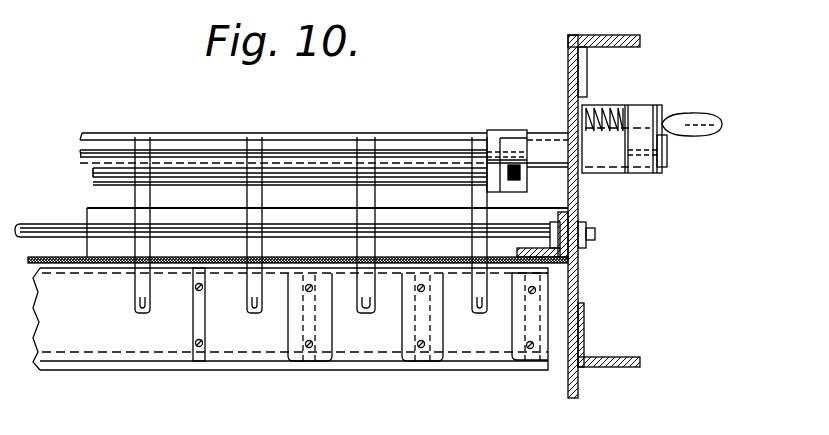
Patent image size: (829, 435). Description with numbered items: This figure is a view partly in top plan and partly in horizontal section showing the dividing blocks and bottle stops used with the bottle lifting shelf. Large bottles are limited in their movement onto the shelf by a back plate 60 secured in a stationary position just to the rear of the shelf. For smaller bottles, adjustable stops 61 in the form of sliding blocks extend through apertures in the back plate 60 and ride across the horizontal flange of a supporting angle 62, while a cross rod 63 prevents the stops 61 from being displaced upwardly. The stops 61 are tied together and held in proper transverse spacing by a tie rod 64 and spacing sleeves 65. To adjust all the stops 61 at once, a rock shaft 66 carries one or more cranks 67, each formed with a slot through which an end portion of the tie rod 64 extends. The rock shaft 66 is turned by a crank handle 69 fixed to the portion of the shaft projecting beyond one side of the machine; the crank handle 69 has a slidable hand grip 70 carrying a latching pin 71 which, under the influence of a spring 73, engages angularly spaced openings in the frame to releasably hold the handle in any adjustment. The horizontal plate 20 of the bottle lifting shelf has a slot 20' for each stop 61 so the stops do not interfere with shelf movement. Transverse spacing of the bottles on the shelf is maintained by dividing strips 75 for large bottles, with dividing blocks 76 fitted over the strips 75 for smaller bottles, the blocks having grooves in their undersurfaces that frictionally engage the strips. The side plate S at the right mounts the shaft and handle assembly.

The horizontal plate 20 is at (290, 336).
The slot 20' is at (422, 282).
The back plate 60 is at (42, 257).
The adjustable stops 61 is at (259, 212).
The supporting angle 62 is at (95, 247).
The cross rod 63 is at (413, 236).
The tie rod 64 is at (107, 173).
The spacing sleeves 65 is at (197, 170).
The rock shaft 66 is at (543, 147).
The crank 67 is at (493, 143).
The crank handle 69 is at (692, 115).
The hand grip 70 is at (690, 136).
The latching pin 71 is at (605, 108).
The spring 73 is at (612, 115).
The dividing strips 75 is at (203, 322).
The dividing blocks 76 is at (325, 325).
The side plate S is at (492, 374).